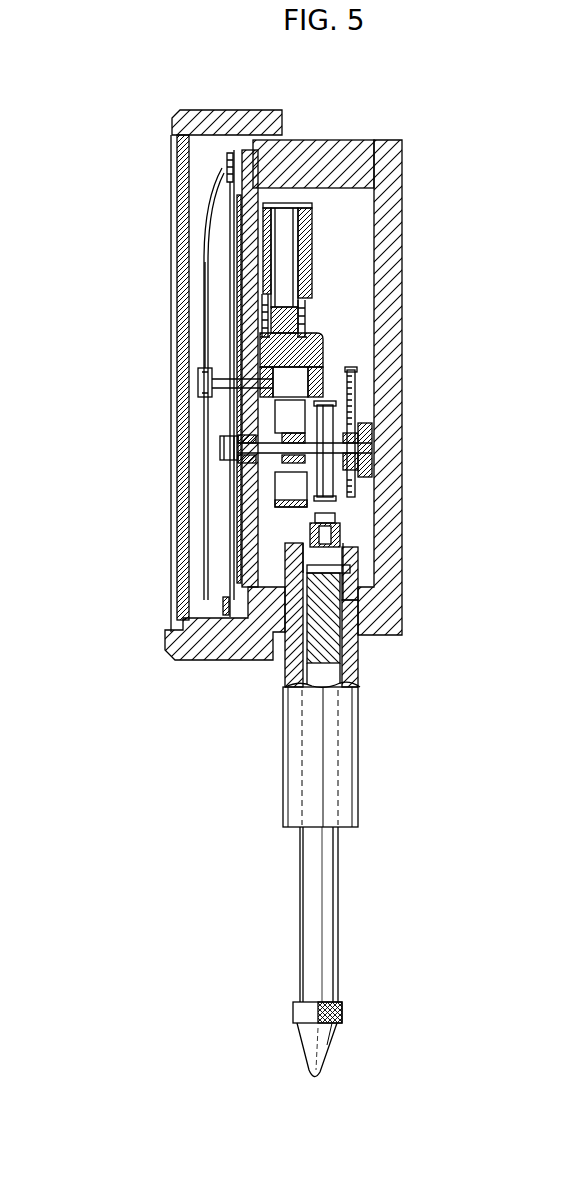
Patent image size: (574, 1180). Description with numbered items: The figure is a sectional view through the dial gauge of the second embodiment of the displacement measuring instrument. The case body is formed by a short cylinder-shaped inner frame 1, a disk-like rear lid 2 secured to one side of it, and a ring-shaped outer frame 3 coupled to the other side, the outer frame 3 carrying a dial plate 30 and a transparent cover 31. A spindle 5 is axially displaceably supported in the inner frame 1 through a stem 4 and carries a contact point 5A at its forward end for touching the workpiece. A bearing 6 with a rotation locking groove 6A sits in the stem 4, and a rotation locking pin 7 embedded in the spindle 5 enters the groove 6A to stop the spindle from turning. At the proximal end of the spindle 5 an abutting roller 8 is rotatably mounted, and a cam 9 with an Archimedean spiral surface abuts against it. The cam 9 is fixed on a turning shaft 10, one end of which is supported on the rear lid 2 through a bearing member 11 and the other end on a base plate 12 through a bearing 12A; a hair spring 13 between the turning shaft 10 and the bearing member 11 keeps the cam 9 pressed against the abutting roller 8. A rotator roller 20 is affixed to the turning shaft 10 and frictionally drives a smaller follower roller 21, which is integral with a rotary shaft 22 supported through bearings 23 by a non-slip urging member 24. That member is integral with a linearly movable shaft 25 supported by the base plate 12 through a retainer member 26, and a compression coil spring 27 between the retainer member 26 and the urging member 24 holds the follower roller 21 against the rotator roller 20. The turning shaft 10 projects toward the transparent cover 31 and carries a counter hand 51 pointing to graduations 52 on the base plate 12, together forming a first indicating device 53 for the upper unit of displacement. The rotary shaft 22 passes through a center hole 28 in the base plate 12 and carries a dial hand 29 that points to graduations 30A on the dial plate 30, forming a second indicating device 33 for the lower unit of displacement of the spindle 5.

The inner frame 1 is at (356, 152).
The rear lid 2 is at (398, 204).
The outer frame 3 is at (278, 108).
The stem 4 is at (290, 775).
The spindle 5 is at (307, 905).
The contact point 5A is at (310, 1056).
The bearing 6 is at (287, 555).
The rotation locking groove 6A is at (360, 582).
The rotation locking pin 7 is at (352, 566).
The abutting roller 8 is at (350, 521).
The cam 9 is at (357, 470).
The turning shaft 10 is at (233, 497).
The bearing member 11 is at (371, 422).
The base plate 12 is at (247, 262).
The bearing 12A is at (230, 476).
The hair spring 13 is at (345, 370).
The rotator roller 20 is at (236, 525).
The follower roller 21 is at (328, 404).
The rotary shaft 22 is at (197, 383).
The bearings 23 is at (318, 352).
The non-slip urging member 24 is at (315, 333).
The linearly movable shaft 25 is at (306, 212).
The retainer member 26 is at (308, 253).
The compression coil spring 27 is at (310, 297).
The center hole 28 is at (201, 366).
The dial hand 29 is at (227, 198).
The dial plate 30 is at (223, 592).
The graduations 30A is at (228, 162).
The transparent cover 31 is at (180, 550).
The second indicating device 33 is at (112, 138).
The counter hand 51 is at (223, 430).
The graduations 52 is at (224, 468).
The first indicating device 53 is at (130, 412).